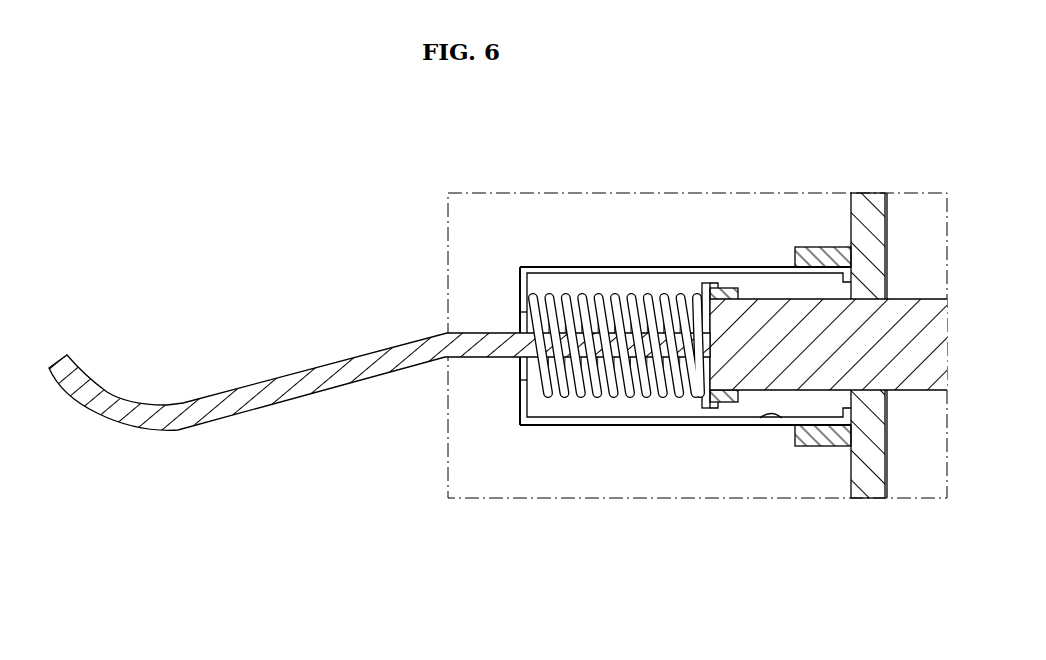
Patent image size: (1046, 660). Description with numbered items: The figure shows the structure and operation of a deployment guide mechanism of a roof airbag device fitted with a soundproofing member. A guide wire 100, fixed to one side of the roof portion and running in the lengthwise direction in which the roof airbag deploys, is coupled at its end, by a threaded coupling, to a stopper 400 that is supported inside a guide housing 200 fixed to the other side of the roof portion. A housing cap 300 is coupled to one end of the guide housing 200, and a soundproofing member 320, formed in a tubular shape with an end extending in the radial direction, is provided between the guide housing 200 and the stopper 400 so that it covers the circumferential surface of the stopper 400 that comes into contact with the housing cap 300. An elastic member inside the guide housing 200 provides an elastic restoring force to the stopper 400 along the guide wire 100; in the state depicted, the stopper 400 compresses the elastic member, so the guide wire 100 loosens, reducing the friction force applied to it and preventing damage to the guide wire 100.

The guide wire 100 is at (307, 385).
The guide housing 200 is at (803, 435).
The housing cap 300 is at (870, 473).
The soundproofing member 320 is at (715, 290).
The stopper 400 is at (825, 323).